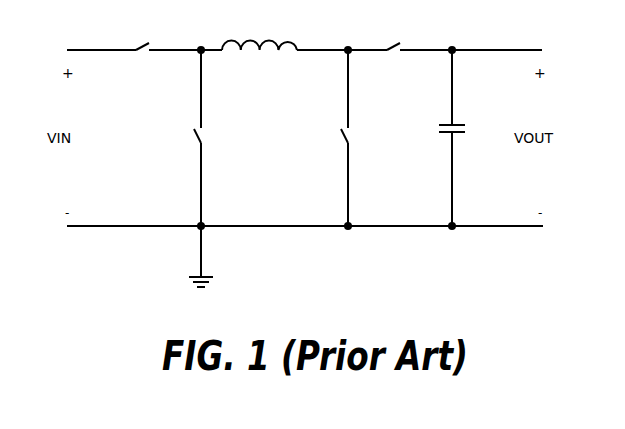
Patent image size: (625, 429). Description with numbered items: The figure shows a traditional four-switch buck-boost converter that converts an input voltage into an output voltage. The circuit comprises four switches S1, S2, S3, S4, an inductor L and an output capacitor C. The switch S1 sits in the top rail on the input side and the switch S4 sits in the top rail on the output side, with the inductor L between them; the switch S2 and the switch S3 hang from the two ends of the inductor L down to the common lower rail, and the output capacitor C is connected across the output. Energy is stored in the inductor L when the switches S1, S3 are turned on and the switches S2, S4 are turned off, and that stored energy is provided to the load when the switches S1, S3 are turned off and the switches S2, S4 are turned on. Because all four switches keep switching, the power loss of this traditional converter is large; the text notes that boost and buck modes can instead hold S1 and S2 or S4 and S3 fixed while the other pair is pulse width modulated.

The switch S1 is at (143, 37).
The switch S2 is at (182, 137).
The switch S3 is at (329, 137).
The switch S4 is at (394, 37).
The inductor L is at (259, 37).
The output capacitor C is at (458, 141).